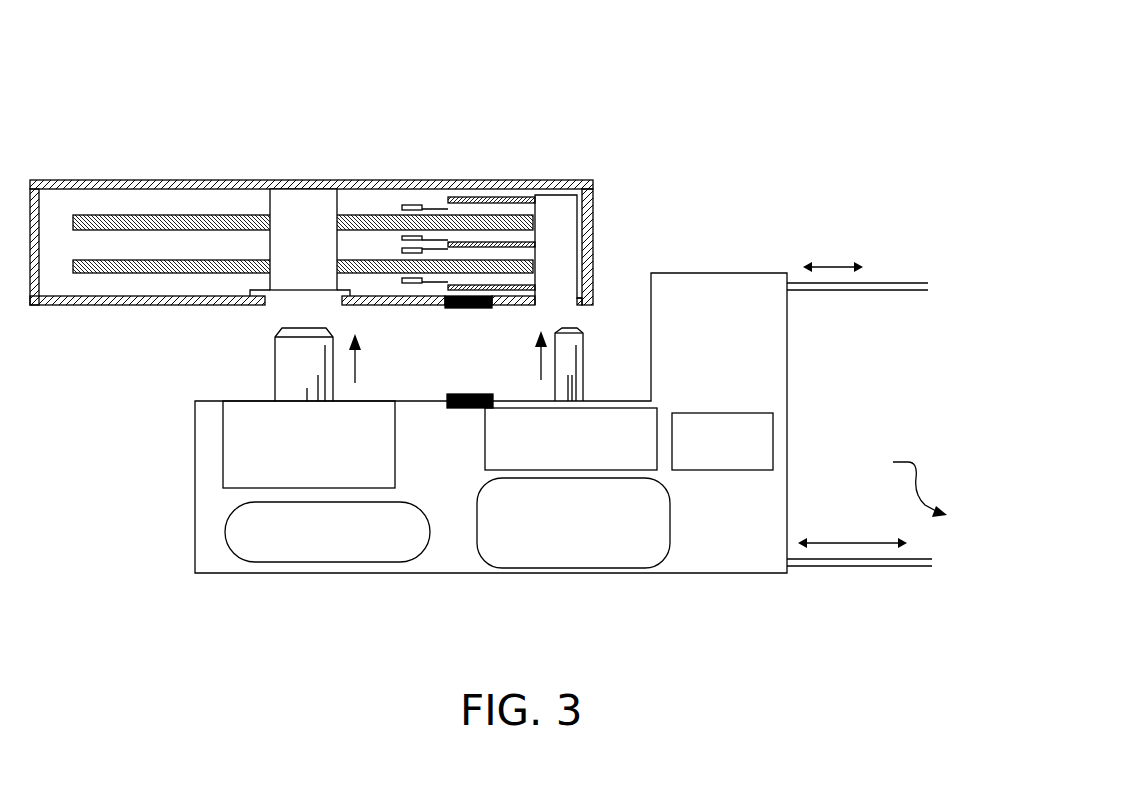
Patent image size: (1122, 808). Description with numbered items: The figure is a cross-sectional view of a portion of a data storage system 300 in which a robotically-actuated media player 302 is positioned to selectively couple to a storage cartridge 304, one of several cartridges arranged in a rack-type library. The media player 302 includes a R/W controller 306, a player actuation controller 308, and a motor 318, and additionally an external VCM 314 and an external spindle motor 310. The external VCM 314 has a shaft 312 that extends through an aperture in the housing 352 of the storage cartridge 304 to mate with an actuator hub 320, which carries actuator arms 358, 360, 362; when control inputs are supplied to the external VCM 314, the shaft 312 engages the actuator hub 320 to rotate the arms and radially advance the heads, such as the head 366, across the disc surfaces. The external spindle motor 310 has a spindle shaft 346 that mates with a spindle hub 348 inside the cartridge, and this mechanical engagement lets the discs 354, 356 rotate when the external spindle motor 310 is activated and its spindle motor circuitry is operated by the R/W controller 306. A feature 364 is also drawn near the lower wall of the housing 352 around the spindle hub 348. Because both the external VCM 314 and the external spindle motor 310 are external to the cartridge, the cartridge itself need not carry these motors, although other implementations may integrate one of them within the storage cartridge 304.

The data storage system 300 is at (704, 55).
The robotically-actuated media player 302 is at (704, 382).
The storage cartridge 304 is at (233, 168).
The R/W controller 306 is at (310, 558).
The player actuation controller 308 is at (556, 562).
The external spindle motor 310 is at (309, 445).
The shaft 312 is at (568, 378).
The external VCM 314 is at (554, 465).
The motor 318 is at (705, 465).
The actuator hub 320 is at (557, 230).
The spindle shaft 346 is at (275, 372).
The spindle hub 348 is at (322, 251).
The housing 352 is at (125, 184).
The disc 354 is at (108, 216).
The disc 356 is at (100, 264).
The actuator arm 358 is at (505, 197).
The actuator arm 360 is at (468, 240).
The actuator arm 362 is at (450, 297).
The spindle opening / step 364 is at (260, 293).
The head 366 is at (402, 207).